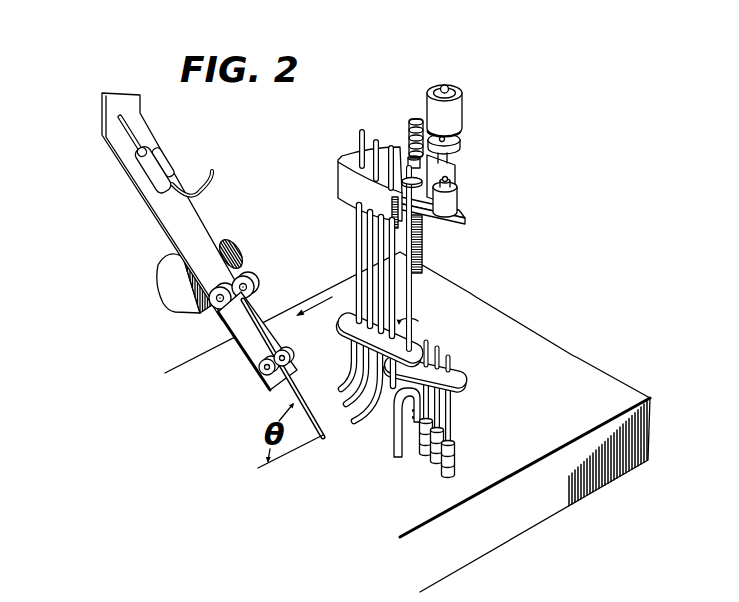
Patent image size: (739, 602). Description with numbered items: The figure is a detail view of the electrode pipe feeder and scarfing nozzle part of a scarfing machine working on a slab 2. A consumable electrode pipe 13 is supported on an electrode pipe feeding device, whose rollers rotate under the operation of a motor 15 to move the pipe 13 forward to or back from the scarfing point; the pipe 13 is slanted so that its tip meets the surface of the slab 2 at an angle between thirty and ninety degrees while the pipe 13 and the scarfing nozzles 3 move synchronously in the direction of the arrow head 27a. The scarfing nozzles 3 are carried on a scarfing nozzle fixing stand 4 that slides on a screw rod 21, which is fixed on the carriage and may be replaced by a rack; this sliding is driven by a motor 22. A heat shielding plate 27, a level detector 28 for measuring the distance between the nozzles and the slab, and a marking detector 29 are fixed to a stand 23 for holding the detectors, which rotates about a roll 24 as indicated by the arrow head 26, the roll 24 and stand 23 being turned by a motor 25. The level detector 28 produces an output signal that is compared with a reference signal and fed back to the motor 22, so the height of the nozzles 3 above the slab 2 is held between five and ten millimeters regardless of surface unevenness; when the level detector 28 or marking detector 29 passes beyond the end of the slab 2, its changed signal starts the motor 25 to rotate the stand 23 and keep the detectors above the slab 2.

The slab 2 is at (589, 369).
The scarfing nozzles 3 is at (402, 331).
The scarfing nozzle fixing stand 4 is at (343, 178).
The consumable electrode pipe 13 is at (248, 364).
The motor 15 is at (160, 283).
The screw rod 21 is at (425, 240).
The motor 22 is at (463, 106).
The stand for holding the detectors 23 is at (463, 378).
The roll 24 is at (411, 290).
The motor 25 is at (458, 206).
The arrow head 26 is at (418, 321).
The heat shielding plate 27 is at (399, 462).
The arrow head 27a is at (331, 297).
The level detector 28 is at (433, 463).
The marking detector 29 is at (455, 450).